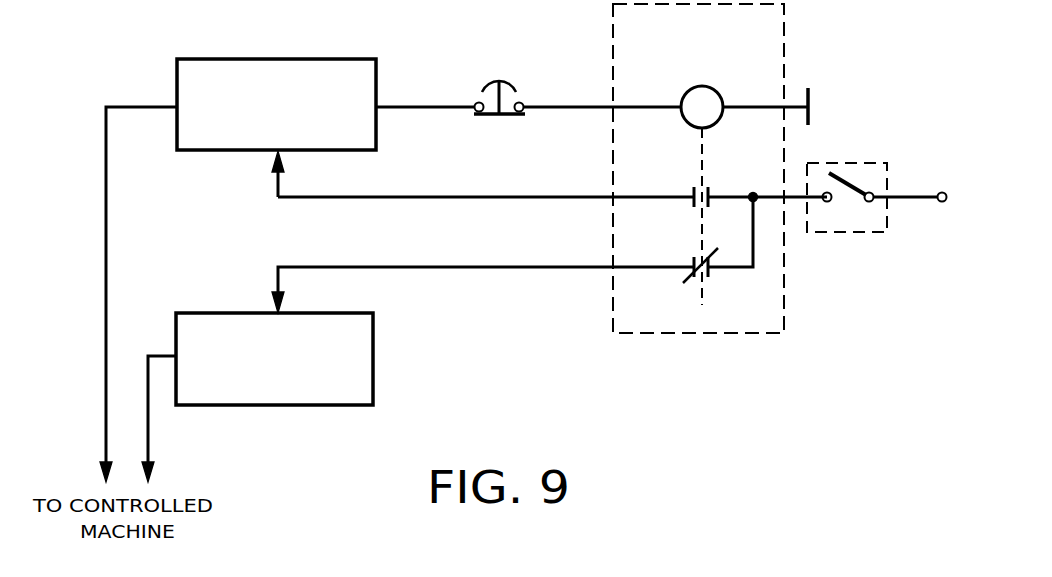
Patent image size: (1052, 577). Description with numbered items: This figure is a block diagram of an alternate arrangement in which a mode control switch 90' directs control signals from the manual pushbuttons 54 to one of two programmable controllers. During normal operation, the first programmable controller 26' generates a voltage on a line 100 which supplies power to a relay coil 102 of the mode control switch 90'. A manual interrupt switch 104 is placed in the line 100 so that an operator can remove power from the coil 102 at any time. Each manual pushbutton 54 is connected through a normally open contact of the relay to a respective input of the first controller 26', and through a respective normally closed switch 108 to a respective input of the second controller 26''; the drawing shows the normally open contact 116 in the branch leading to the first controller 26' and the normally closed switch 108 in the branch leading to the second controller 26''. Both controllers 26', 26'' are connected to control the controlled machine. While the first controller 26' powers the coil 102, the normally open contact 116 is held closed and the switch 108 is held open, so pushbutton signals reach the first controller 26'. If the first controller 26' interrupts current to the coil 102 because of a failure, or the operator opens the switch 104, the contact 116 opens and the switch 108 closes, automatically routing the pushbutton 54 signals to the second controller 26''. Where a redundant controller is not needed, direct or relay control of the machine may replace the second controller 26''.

The first programmable controller 26' is at (276, 89).
The second programmable controller 26'' is at (274, 339).
The line 100 is at (415, 109).
The manual interrupt switch 104 is at (499, 116).
The relay coil 102 is at (716, 117).
The normally open relay contacts 116 is at (697, 185).
The normally closed switch 108 is at (697, 257).
The mode control switch 90' is at (698, 189).
The manual pushbutton 54 is at (852, 162).